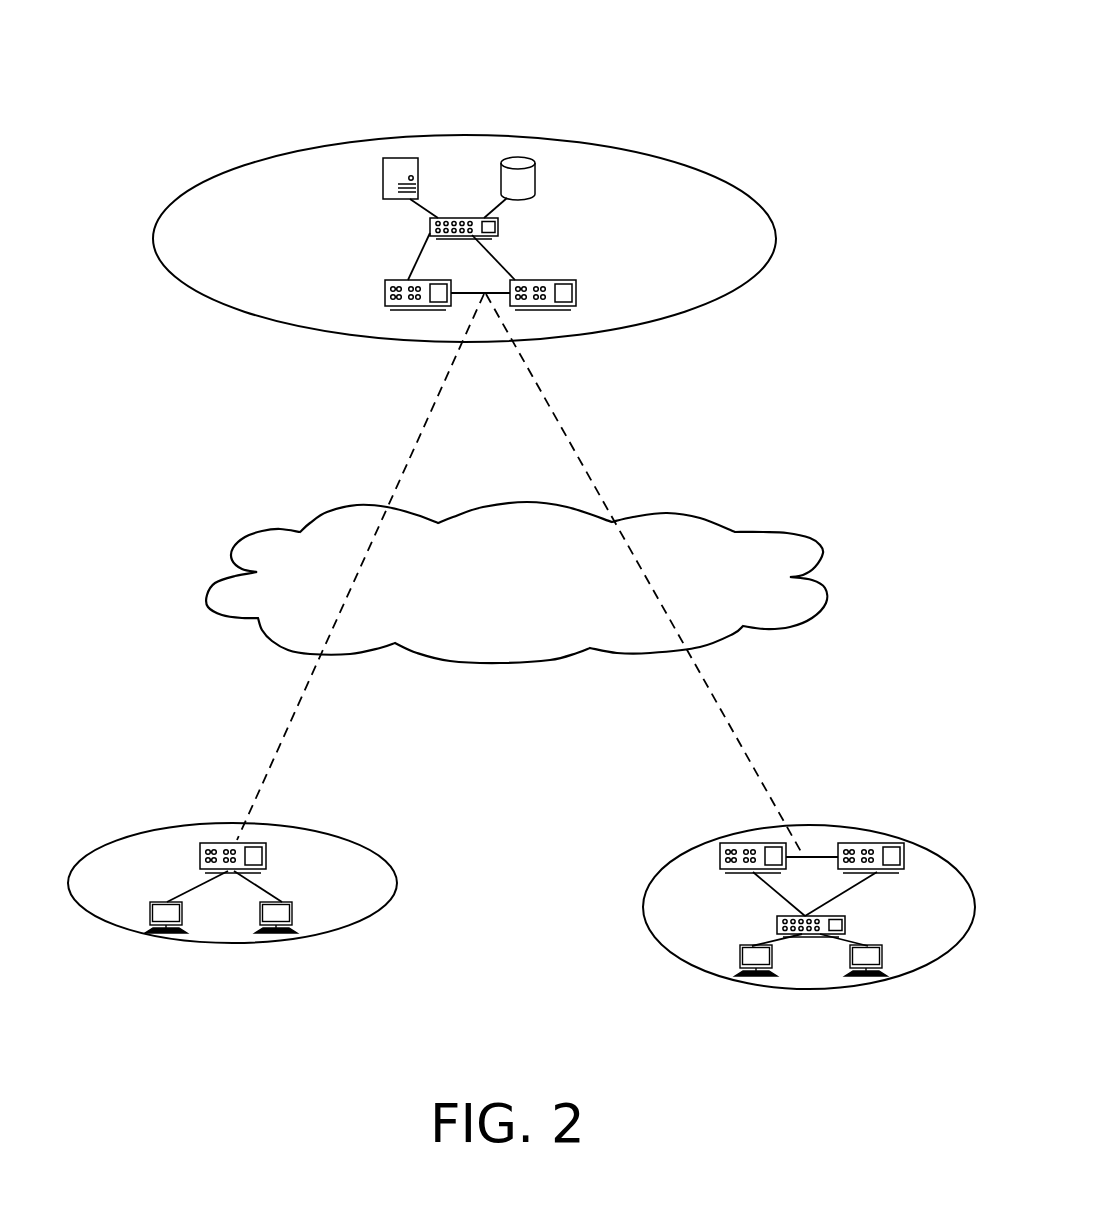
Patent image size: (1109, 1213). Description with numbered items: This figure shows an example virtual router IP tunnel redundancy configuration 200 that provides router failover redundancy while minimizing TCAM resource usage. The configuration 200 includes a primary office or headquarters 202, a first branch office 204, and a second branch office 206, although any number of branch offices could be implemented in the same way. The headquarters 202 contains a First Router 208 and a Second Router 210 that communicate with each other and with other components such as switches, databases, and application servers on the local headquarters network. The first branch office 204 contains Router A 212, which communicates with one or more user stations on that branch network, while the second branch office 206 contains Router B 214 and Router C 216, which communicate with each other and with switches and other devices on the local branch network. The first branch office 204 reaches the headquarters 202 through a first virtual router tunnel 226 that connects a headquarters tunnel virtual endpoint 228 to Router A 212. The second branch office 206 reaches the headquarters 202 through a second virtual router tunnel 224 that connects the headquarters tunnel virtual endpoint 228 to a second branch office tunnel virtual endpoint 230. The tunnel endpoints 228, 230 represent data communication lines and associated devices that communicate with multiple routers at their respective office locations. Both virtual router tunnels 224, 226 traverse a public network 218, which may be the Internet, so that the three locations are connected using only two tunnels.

The virtual router IP tunnel redundancy configuration 200 is at (826, 52).
The headquarters 202 is at (776, 240).
The first branch office 204 is at (300, 877).
The second branch office 206 is at (748, 886).
The First Router 208 is at (385, 293).
The Second Router 210 is at (577, 293).
The Router A 212 is at (265, 857).
The Router B 214 is at (720, 857).
The Router C 216 is at (905, 857).
The public network 218 is at (812, 580).
The second virtual router tunnel 224 is at (548, 400).
The first virtual router tunnel 226 is at (400, 477).
The headquarters tunnel virtual endpoint 228 is at (485, 297).
The second branch office tunnel virtual endpoint 230 is at (859, 807).